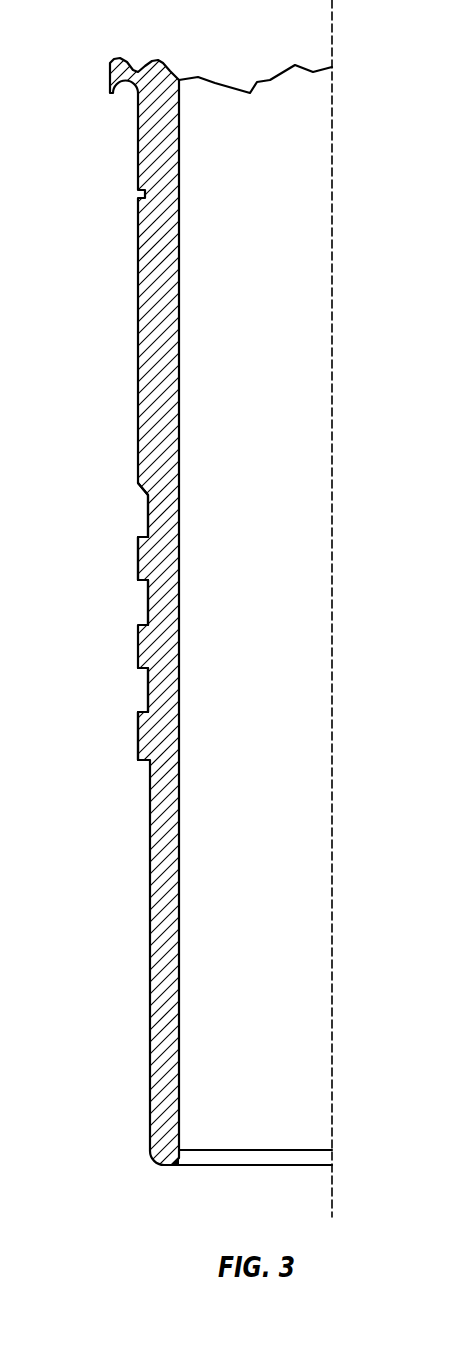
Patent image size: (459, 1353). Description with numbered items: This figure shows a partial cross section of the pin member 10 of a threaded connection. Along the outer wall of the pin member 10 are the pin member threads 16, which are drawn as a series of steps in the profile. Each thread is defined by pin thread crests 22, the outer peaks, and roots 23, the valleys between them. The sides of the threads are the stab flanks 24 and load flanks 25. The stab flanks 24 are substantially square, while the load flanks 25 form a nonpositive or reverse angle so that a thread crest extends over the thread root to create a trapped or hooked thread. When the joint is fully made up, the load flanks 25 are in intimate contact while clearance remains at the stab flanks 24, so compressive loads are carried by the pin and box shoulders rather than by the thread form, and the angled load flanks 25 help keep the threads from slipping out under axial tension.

The pin member 10 is at (110, 80).
The pin member threads 16 is at (138, 555).
The pin thread crests 22 is at (142, 737).
The roots 23 is at (148, 693).
The stab flanks 24 is at (143, 583).
The load flanks 25 is at (147, 538).